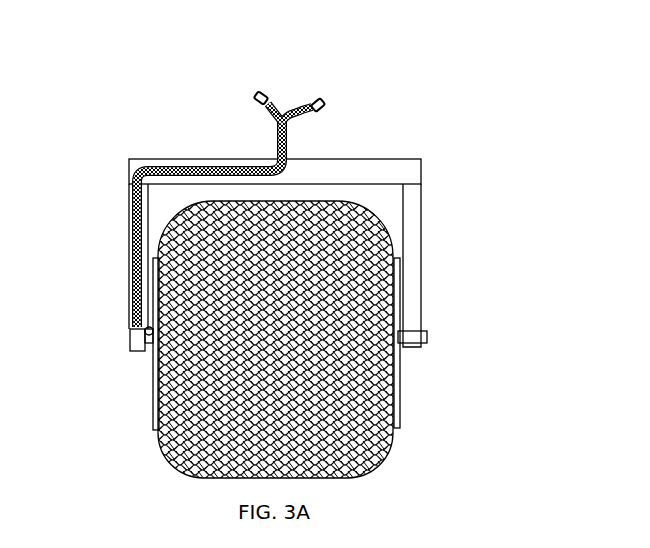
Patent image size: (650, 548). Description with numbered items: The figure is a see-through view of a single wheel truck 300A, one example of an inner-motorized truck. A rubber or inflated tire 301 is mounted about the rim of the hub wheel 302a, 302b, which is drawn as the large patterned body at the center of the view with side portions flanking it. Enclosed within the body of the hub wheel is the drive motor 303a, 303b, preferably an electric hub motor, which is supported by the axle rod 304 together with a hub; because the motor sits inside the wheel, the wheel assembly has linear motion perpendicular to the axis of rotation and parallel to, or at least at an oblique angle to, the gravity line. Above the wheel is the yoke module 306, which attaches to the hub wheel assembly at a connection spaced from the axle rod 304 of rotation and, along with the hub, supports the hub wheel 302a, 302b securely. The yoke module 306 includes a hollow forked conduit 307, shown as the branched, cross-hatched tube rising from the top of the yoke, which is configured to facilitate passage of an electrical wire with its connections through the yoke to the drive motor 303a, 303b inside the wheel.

The single wheel truck 300A is at (122, 40).
The tire 301 is at (160, 430).
The hub wheel 302a is at (154, 347).
The hub wheel 302b is at (404, 347).
The drive motor 303a is at (124, 338).
The drive motor 303b is at (434, 338).
The axle rod 304 is at (133, 183).
The yoke module 306 is at (146, 328).
The hollow forked conduit 307 is at (256, 101).